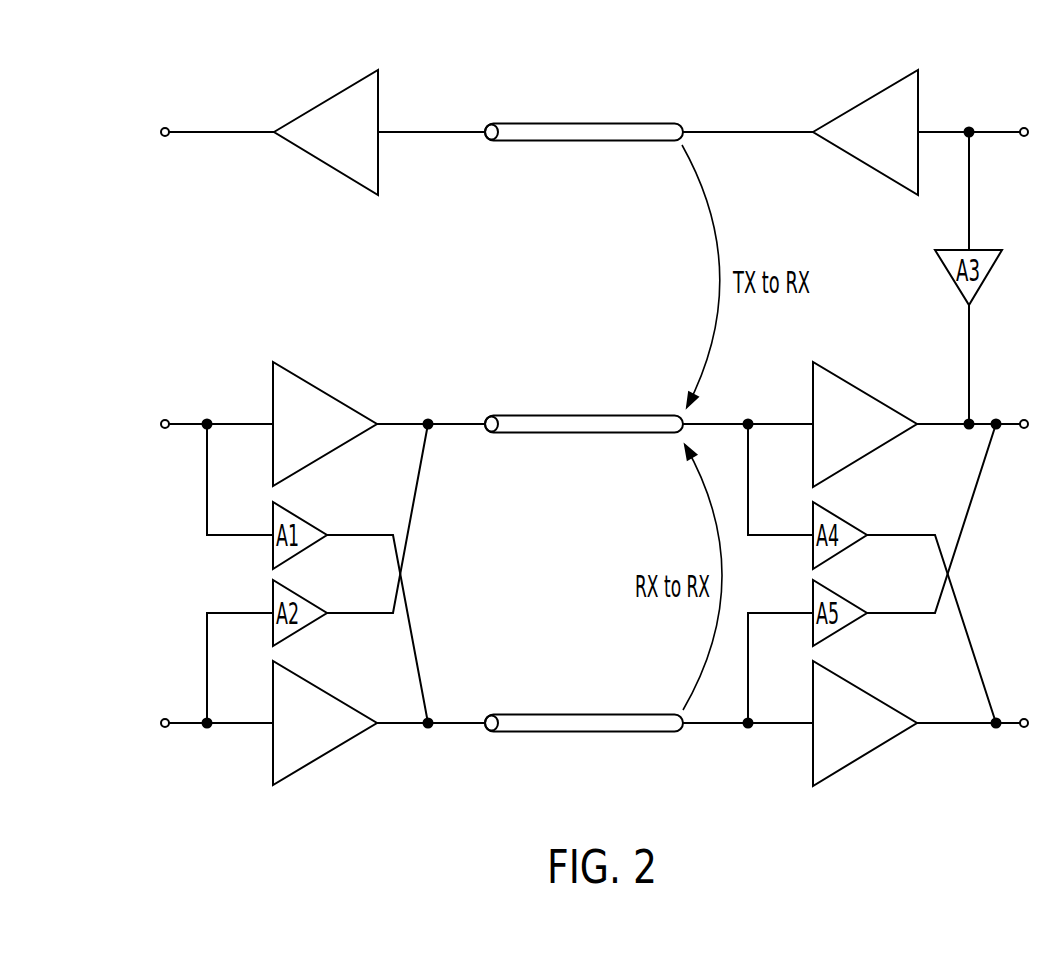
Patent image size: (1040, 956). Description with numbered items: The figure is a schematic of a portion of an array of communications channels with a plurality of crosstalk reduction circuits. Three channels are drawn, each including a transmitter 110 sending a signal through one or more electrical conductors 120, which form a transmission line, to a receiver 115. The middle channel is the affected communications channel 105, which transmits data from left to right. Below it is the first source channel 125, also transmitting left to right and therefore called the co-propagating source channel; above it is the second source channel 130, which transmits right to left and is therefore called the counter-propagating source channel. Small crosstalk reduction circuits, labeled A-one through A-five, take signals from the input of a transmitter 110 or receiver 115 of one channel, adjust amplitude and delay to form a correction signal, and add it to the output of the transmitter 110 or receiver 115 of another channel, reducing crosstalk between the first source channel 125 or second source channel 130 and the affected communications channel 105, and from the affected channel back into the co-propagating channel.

The affected communications channel 105 is at (108, 351).
The transmitter 110 is at (878, 92).
The receiver 115 is at (338, 92).
The electrical conductors 120 is at (585, 122).
The first source channel 125 is at (108, 645).
The second source channel 130 is at (108, 58).